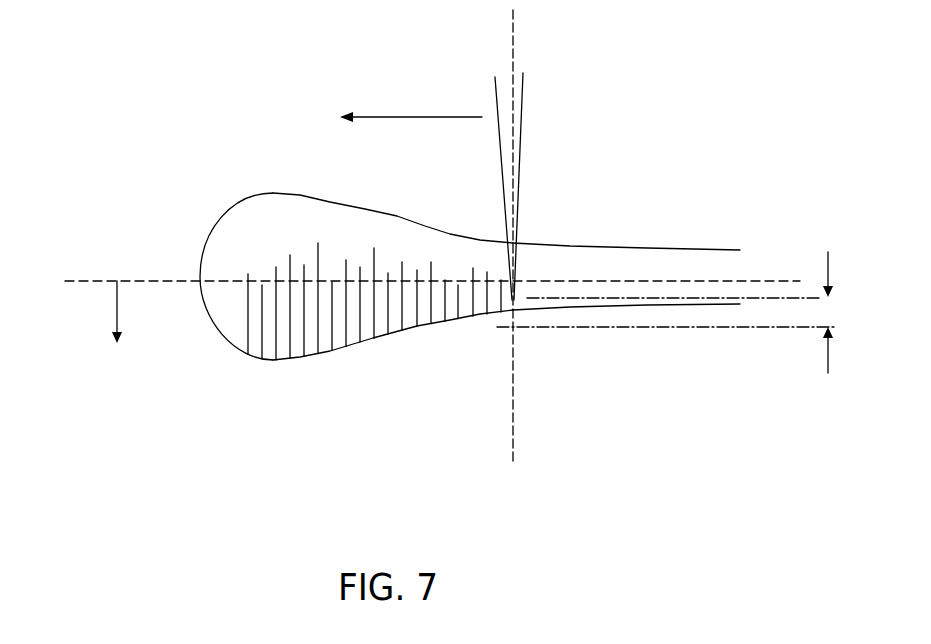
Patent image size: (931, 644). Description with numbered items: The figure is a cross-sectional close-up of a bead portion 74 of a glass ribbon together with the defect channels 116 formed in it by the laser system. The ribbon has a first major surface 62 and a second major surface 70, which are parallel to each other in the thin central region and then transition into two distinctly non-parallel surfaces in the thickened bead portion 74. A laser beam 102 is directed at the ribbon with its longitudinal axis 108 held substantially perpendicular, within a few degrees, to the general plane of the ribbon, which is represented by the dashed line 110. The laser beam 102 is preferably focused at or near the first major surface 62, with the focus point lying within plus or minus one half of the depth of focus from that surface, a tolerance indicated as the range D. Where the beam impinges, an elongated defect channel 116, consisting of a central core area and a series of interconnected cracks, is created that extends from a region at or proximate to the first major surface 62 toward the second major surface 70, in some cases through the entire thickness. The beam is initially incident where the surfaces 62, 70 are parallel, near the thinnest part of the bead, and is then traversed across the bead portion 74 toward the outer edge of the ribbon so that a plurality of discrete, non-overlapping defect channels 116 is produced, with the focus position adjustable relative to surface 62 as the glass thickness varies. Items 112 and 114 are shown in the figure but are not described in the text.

The first major surface 62 is at (412, 328).
The second major surface 70 is at (647, 248).
The bead portion 74 is at (272, 180).
The laser beam 102 is at (523, 138).
The longitudinal axis 108 is at (510, 418).
The general plane of the ribbon 110 is at (150, 280).
The direction of movement 112 is at (117, 310).
The trailing edge 114 is at (512, 298).
The defect channel 116 is at (248, 300).
The range D is at (669, 330).